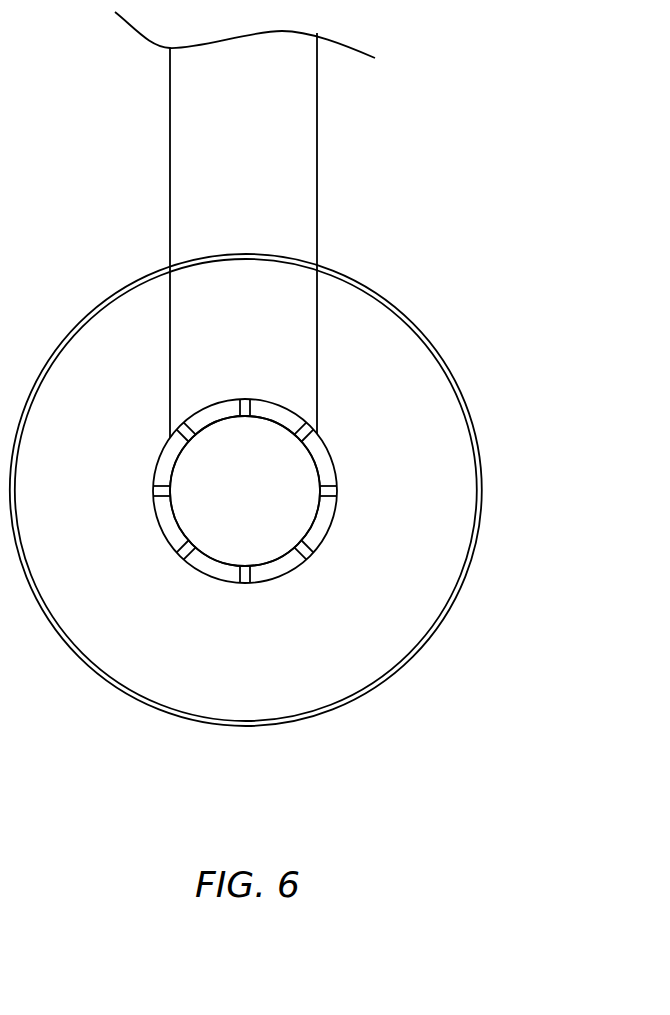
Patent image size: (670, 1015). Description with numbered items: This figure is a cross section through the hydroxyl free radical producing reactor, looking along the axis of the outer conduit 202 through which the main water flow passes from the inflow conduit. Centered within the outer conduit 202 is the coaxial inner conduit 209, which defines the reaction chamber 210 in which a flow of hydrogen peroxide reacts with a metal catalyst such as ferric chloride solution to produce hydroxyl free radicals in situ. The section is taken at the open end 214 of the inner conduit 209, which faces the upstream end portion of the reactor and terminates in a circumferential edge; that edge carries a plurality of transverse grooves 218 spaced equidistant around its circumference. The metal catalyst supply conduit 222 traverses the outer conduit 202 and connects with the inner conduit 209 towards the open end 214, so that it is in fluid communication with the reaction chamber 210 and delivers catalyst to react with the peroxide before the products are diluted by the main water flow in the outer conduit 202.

The outer conduit 202 is at (430, 350).
The inner conduit 209 is at (160, 462).
The reaction chamber 210 is at (220, 500).
The open end 214 is at (317, 528).
The transverse grooves 218 is at (330, 490).
The metal catalyst supply conduit 222 is at (317, 178).